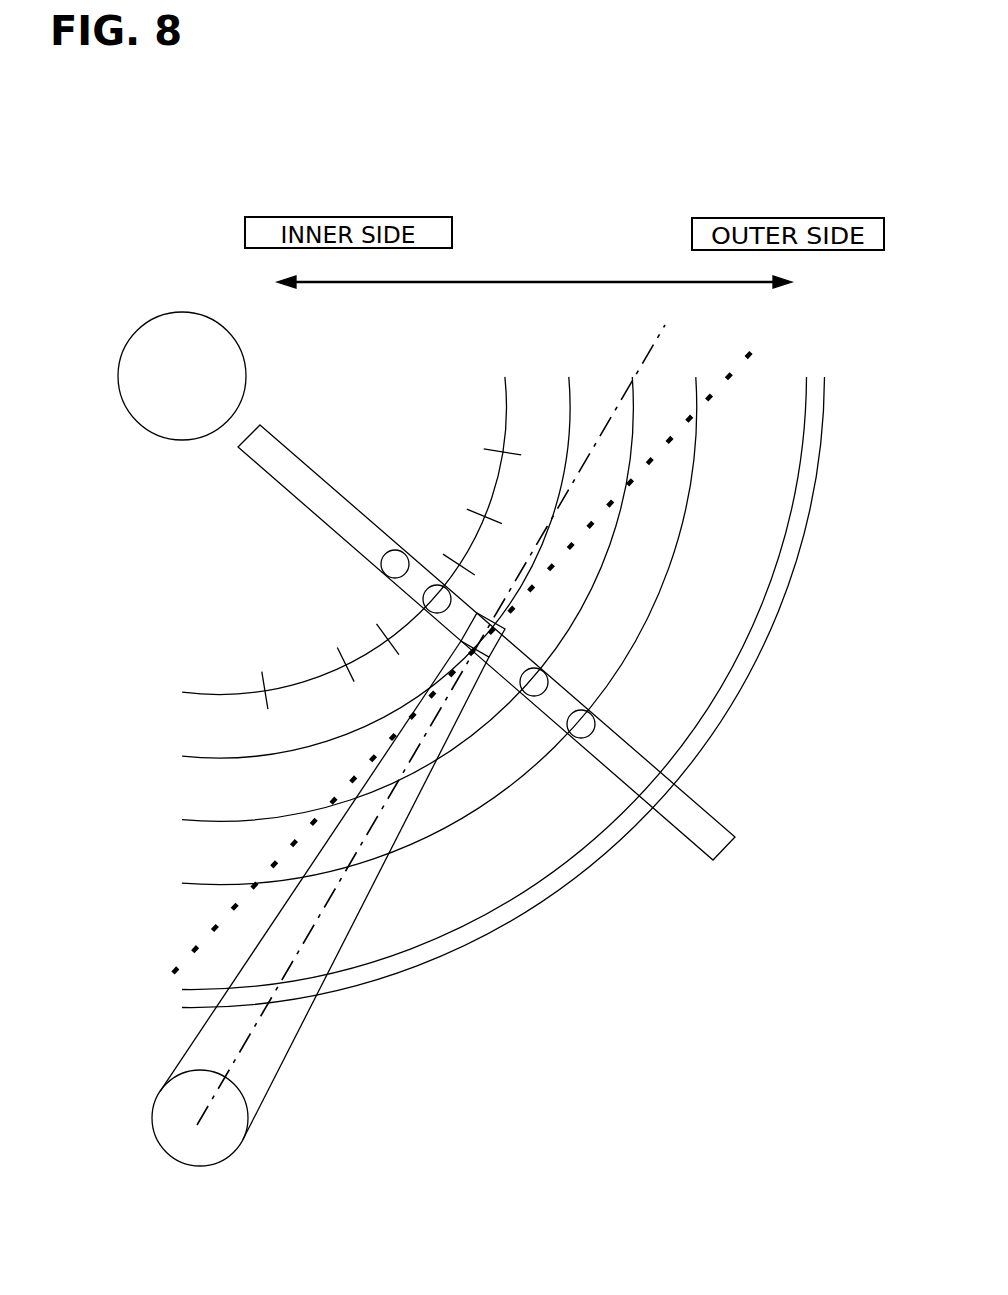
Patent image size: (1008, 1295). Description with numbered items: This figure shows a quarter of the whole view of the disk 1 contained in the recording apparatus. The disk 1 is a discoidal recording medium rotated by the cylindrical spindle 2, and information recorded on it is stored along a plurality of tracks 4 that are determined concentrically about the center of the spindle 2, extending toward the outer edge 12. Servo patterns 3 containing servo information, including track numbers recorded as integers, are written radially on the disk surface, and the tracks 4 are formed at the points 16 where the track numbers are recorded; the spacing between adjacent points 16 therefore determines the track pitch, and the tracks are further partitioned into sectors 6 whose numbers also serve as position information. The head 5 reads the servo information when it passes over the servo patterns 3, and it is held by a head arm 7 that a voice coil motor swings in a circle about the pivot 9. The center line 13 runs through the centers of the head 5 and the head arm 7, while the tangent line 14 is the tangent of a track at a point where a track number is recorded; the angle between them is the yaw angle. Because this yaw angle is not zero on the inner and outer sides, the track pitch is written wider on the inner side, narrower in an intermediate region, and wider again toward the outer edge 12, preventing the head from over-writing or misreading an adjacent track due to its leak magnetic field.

The disk 1 is at (740, 522).
The spindle 2 is at (150, 377).
The servo pattern 3 is at (287, 495).
The tracks 4 is at (182, 693).
The head 5 is at (482, 656).
The sectors 6 is at (333, 648).
The head arm 7 is at (360, 907).
The pivot 9 is at (243, 1138).
The outer edge 12 is at (770, 636).
The center line 13 is at (613, 420).
The tangent line 14 is at (711, 400).
The points 16 is at (437, 585).